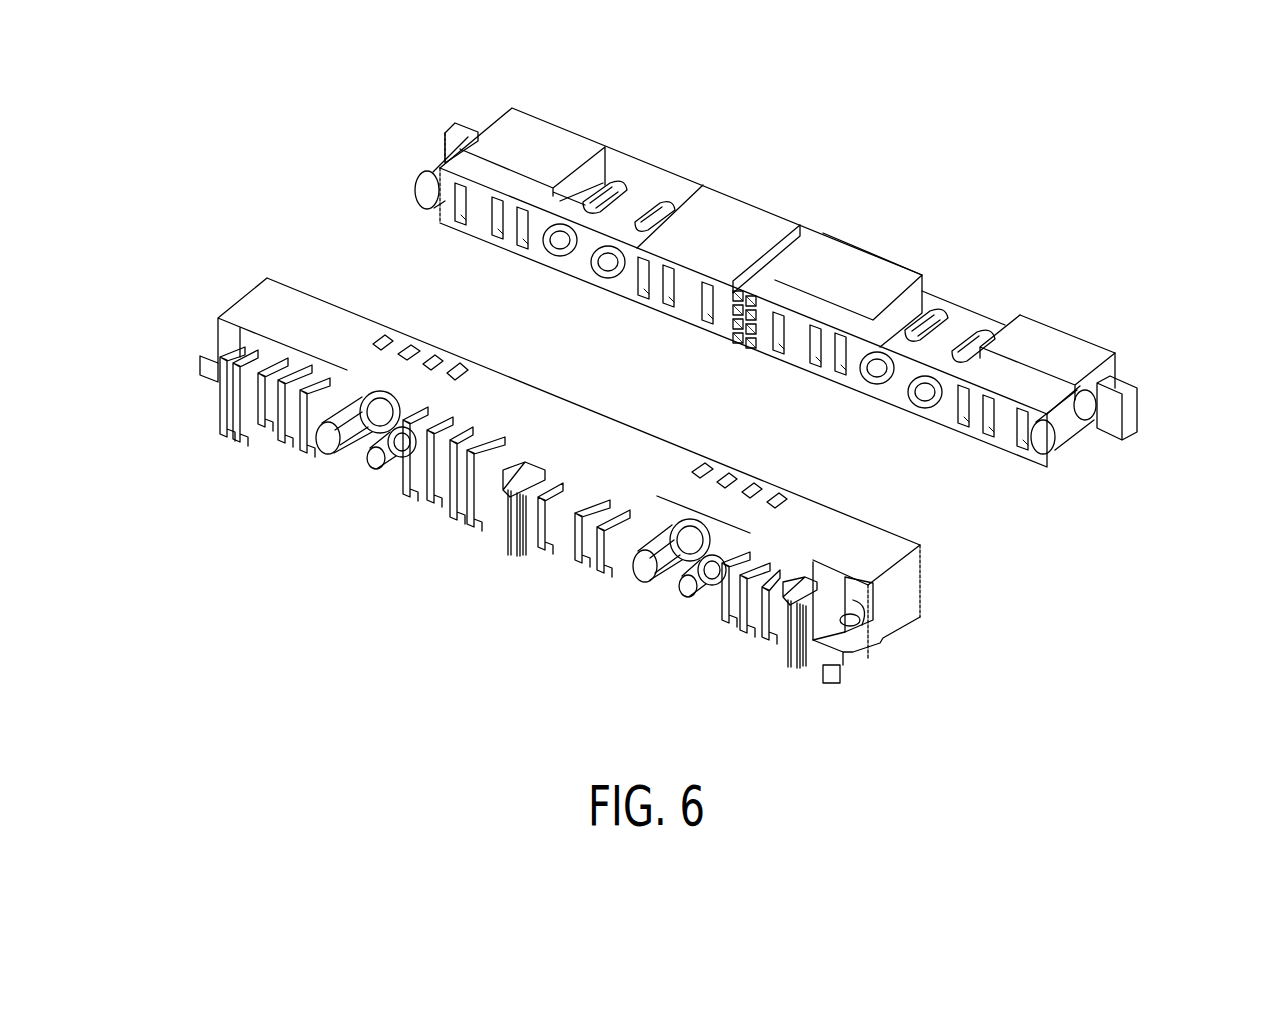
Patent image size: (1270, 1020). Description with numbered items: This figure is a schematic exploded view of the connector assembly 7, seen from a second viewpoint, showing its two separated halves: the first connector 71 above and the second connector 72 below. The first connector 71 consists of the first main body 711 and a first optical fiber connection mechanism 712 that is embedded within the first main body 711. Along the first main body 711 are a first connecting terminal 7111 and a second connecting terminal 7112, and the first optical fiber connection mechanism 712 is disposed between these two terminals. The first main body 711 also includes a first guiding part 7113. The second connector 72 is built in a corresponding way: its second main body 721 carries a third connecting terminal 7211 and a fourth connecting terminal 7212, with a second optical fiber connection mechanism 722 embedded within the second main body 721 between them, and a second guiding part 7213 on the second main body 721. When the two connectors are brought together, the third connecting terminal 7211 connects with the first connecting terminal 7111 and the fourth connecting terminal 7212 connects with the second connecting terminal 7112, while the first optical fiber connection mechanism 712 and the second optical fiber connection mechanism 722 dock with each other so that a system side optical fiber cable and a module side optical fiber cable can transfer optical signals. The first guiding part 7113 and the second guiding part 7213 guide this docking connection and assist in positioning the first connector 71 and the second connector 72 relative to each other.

The connector assembly 7 is at (1155, 171).
The first connector 71 is at (503, 132).
The first main body 711 is at (930, 417).
The first connecting terminal 7111 is at (1027, 417).
The second connecting terminal 7112 is at (623, 422).
The first guiding part 7113 is at (420, 175).
The first optical fiber connection mechanism 712 is at (973, 347).
The second connector 72 is at (270, 315).
The second main body 721 is at (900, 613).
The third connecting terminal 7211 is at (787, 663).
The fourth connecting terminal 7212 is at (517, 557).
The second guiding part 7213 is at (855, 610).
The second optical fiber connection mechanism 722 is at (713, 575).